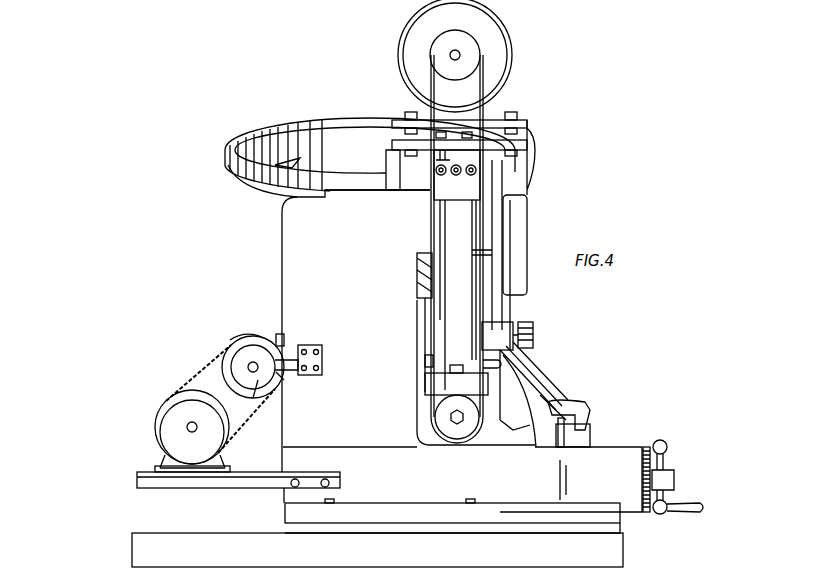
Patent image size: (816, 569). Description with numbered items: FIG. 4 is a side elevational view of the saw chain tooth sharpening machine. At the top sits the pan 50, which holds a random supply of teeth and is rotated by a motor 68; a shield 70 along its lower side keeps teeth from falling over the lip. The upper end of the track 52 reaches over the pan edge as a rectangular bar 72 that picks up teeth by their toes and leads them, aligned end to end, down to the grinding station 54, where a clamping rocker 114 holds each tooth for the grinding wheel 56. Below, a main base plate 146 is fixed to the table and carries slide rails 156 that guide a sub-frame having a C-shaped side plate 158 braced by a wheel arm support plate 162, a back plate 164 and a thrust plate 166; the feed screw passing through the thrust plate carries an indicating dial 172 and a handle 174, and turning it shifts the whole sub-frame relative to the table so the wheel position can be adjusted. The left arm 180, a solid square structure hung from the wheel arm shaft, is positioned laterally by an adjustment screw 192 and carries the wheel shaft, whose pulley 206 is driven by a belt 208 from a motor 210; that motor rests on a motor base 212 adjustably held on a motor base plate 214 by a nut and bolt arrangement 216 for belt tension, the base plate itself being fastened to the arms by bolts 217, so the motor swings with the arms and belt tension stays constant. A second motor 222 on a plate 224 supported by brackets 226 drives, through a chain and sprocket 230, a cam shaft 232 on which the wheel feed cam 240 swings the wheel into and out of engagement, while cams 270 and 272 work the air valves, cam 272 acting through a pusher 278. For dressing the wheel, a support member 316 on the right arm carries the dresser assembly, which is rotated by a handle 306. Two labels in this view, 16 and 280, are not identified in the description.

The gap dimension 16 is at (437, 207).
The pan 50 is at (263, 135).
The track 52 is at (518, 370).
The grinding station 54 is at (606, 432).
The grinding wheel 56 is at (540, 402).
The motor 68 is at (518, 216).
The shield 70 is at (386, 157).
The rectangular bar 72 is at (288, 162).
The clamping member or rocker 114 is at (577, 404).
The main base plate 146 is at (620, 535).
The slide rails 156 is at (422, 504).
The side plate 158 is at (392, 303).
The top or wheel arm support plate 162 is at (380, 192).
The back plate 164 is at (283, 345).
The front or screw thrust plate 166 is at (640, 478).
The indicating dial 172 is at (646, 446).
The handle 174 is at (667, 444).
The left arm 180 is at (430, 243).
The adjustment screw 192 is at (432, 194).
The pulley 206 is at (486, 420).
The belt 208 is at (470, 108).
The motor 210 is at (498, 58).
The motor base 212 is at (522, 124).
The motor base plate 214 is at (530, 150).
The nut and bolt arrangement 216 is at (517, 115).
The bolts 217 is at (458, 128).
The motor 222 is at (167, 421).
The plate 224 is at (152, 470).
The brackets 226 is at (175, 488).
The chain and sprocket 230 is at (215, 395).
The cam shaft 232 is at (248, 362).
The wheel feed cam 240 is at (238, 334).
The cam 270 is at (256, 343).
The cam 272 is at (258, 380).
The pusher 278 is at (298, 368).
The bracket 280 is at (322, 353).
The handle 306 is at (534, 330).
The support member 316 is at (505, 322).